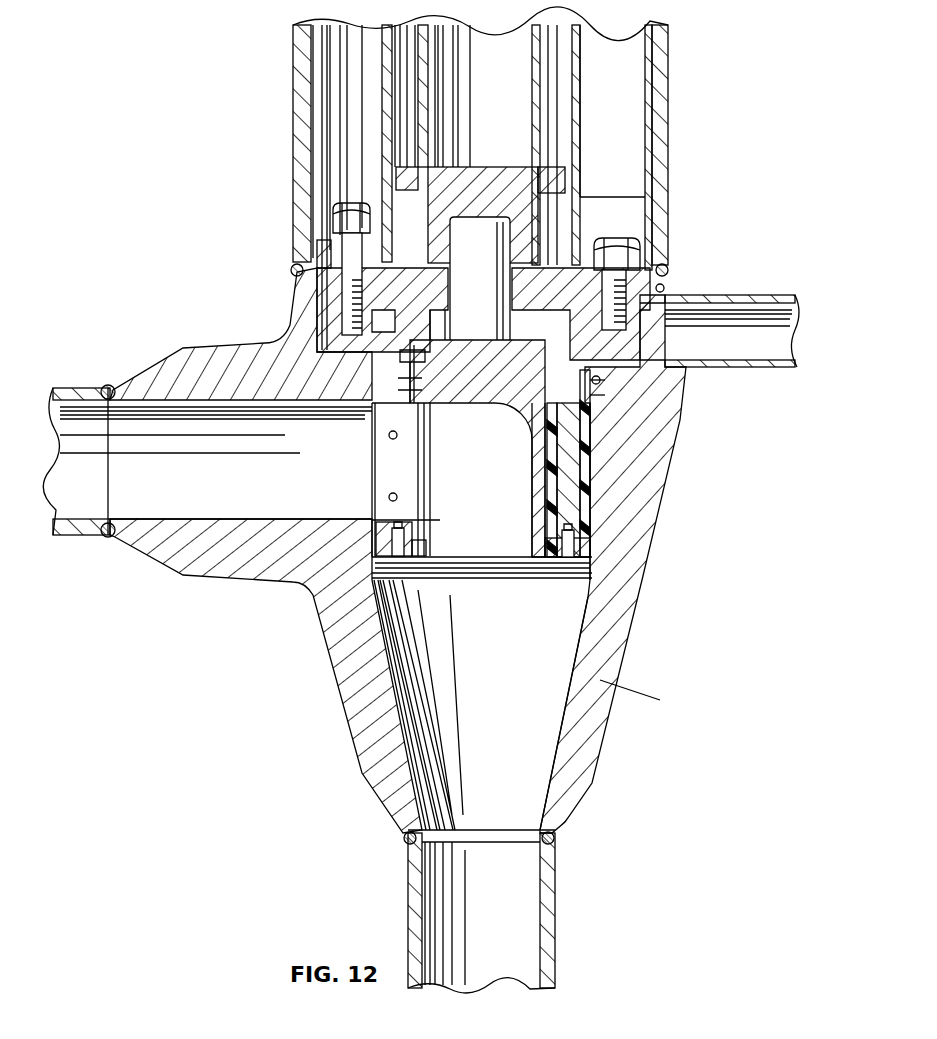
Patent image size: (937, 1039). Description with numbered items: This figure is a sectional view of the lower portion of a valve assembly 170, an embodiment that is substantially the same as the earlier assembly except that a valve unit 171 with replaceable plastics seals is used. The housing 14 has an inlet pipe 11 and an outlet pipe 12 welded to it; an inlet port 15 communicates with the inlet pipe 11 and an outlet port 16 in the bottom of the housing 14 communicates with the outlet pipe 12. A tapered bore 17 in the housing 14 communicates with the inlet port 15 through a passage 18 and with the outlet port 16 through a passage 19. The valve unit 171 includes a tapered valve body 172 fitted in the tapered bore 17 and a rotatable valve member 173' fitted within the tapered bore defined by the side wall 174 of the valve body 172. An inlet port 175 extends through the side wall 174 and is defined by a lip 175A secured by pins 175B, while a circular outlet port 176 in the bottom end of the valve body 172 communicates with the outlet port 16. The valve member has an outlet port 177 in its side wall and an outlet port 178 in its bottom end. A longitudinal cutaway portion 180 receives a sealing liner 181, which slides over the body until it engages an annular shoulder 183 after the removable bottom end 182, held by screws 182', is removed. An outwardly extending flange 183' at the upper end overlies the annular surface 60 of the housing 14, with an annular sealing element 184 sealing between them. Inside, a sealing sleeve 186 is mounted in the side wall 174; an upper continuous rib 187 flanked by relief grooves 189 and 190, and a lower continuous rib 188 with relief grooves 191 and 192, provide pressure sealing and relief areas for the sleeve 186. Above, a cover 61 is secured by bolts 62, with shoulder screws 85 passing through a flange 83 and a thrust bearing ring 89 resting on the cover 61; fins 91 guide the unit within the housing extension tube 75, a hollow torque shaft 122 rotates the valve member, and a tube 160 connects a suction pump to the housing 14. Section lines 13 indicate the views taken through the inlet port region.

The inlet pipe 11 is at (72, 388).
The outlet pipe 12 is at (408, 890).
The section line 13 is at (322, 425).
The housing 14 is at (340, 500).
The inlet port 15 is at (128, 520).
The outlet port 16 is at (420, 846).
The tapered bore 17 is at (590, 428).
The passage 18 is at (212, 519).
The passage 19 is at (548, 763).
The annular surface 60 is at (640, 357).
The cover 61 is at (328, 287).
The bolts 62 is at (638, 247).
The housing extension tube 75 is at (668, 58).
The flange 83 is at (323, 256).
The shoulder screws 85 is at (340, 215).
The thrust bearing ring 89 is at (586, 262).
The longitudinal fins 91 is at (635, 105).
The hollow torque shaft 122 is at (540, 76).
The tube 160 is at (748, 294).
The valve assembly 170 is at (642, 680).
The valve unit 171 is at (630, 515).
The valve body 172 is at (632, 468).
The sleeve 173' is at (582, 480).
The side wall 174 is at (536, 431).
The inlet port 175 is at (398, 520).
The lip 175A is at (372, 456).
The pins 175B is at (388, 432).
The outlet port 176 is at (535, 566).
The outlet port 177 is at (412, 530).
The outlet port 178 is at (445, 566).
The longitudinal cutaway portion 180 is at (600, 410).
The sealing liner 181 is at (600, 430).
The removable bottom end 182 is at (619, 561).
The screws 182' is at (636, 540).
The annular shoulder 183 is at (622, 381).
The flange 183' is at (694, 273).
The annular sealing element 184 is at (640, 332).
The sealing liner or sleeve 186 is at (547, 470).
The upper continuous rib 187 is at (420, 388).
The lower continuous rib 188 is at (425, 540).
The relief groove 189 is at (420, 372).
The relief groove 190 is at (416, 383).
The annular relief groove 191 is at (420, 548).
The relief groove 192 is at (424, 520).